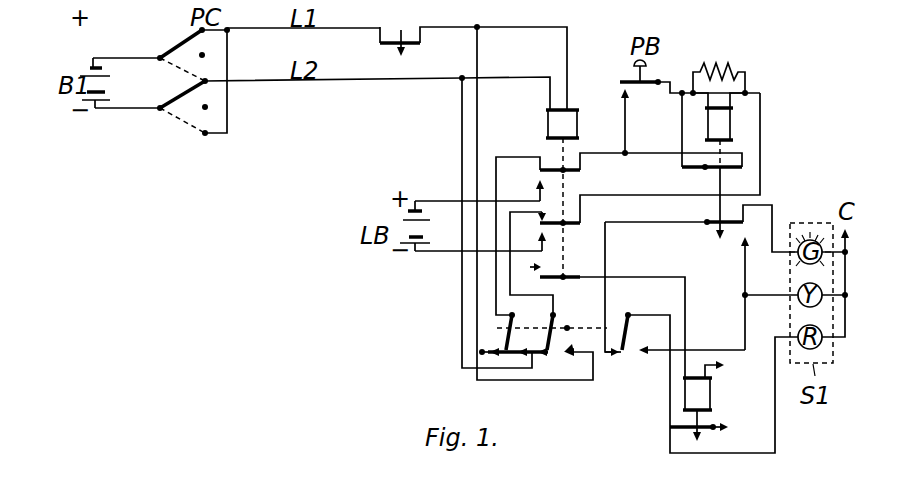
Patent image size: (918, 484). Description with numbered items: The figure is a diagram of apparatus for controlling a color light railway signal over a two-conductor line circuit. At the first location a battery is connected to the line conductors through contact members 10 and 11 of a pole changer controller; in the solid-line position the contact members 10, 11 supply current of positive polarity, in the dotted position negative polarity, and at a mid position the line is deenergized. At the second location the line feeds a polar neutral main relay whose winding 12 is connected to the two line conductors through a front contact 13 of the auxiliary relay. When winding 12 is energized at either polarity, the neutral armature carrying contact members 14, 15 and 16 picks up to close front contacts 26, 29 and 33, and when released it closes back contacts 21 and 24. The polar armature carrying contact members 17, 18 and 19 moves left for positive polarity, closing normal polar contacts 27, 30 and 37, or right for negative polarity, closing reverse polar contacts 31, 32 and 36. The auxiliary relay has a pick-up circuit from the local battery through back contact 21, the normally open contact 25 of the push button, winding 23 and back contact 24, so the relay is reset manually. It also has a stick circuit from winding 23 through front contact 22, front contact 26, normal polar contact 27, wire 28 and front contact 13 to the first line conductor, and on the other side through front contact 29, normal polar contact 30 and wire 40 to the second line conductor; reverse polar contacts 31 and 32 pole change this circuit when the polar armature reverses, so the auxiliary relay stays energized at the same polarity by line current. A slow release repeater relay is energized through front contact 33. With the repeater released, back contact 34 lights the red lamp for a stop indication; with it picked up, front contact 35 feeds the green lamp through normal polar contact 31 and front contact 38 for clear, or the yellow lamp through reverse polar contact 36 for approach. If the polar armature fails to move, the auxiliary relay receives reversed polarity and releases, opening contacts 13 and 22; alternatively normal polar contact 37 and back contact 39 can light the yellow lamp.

The contact member 10 is at (190, 40).
The contact member 11 is at (190, 96).
The winding 12 is at (566, 108).
The front contact 13 is at (378, 42).
The contact member 14 is at (580, 174).
The contact member 15 is at (580, 218).
The contact member 16 is at (580, 270).
The contact member 17 is at (512, 354).
The contact member 18 is at (545, 312).
The contact member 19 is at (626, 316).
The back contact 21 is at (540, 185).
The front contact 22 is at (745, 164).
The winding 23 is at (704, 126).
The back contact 24 is at (546, 244).
The normally open contact 25 is at (628, 100).
The front contact 26 is at (541, 157).
The normal polar contact 27 is at (500, 349).
The wire 28 is at (481, 96).
The front contact 29 is at (545, 228).
The normal polar contact 30 is at (537, 354).
The reverse polar contact 31 is at (516, 352).
The reverse polar contact 32 is at (568, 348).
The front contact 33 is at (544, 286).
The back contact 34 is at (668, 440).
The front contact 35 is at (668, 414).
The reverse polar contact 36 is at (642, 352).
The normal polar contact 37 is at (613, 370).
The front contact 38 is at (748, 210).
The back contact 39 is at (744, 246).
The wire 40 is at (460, 114).